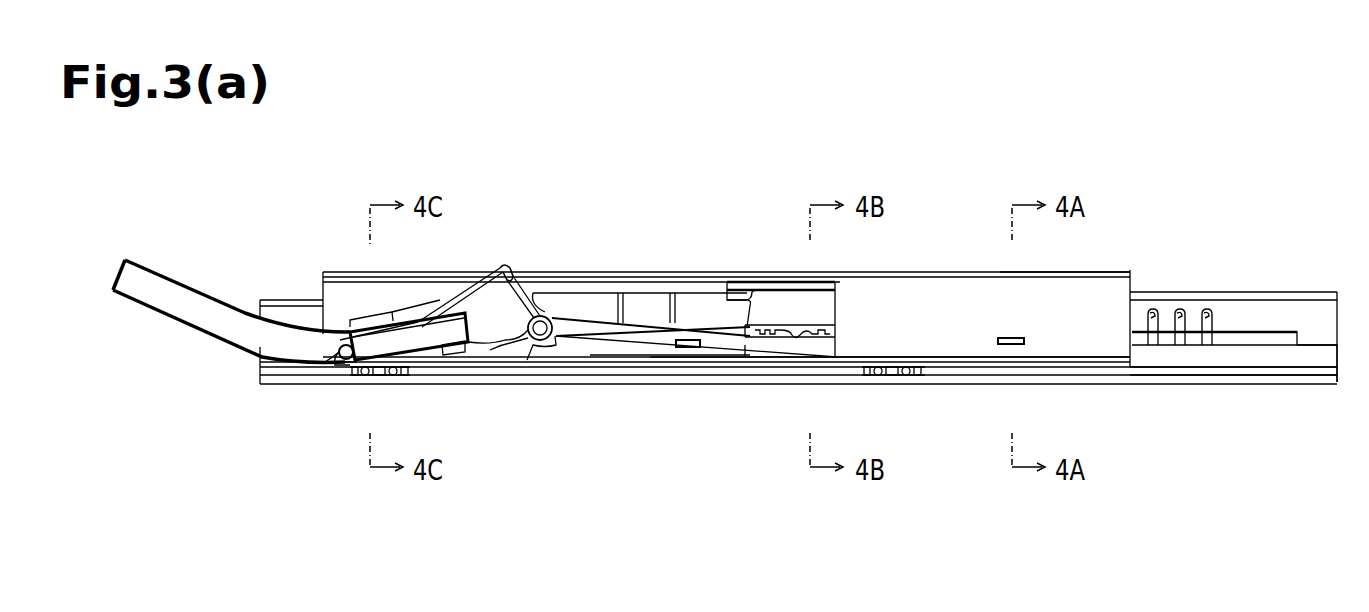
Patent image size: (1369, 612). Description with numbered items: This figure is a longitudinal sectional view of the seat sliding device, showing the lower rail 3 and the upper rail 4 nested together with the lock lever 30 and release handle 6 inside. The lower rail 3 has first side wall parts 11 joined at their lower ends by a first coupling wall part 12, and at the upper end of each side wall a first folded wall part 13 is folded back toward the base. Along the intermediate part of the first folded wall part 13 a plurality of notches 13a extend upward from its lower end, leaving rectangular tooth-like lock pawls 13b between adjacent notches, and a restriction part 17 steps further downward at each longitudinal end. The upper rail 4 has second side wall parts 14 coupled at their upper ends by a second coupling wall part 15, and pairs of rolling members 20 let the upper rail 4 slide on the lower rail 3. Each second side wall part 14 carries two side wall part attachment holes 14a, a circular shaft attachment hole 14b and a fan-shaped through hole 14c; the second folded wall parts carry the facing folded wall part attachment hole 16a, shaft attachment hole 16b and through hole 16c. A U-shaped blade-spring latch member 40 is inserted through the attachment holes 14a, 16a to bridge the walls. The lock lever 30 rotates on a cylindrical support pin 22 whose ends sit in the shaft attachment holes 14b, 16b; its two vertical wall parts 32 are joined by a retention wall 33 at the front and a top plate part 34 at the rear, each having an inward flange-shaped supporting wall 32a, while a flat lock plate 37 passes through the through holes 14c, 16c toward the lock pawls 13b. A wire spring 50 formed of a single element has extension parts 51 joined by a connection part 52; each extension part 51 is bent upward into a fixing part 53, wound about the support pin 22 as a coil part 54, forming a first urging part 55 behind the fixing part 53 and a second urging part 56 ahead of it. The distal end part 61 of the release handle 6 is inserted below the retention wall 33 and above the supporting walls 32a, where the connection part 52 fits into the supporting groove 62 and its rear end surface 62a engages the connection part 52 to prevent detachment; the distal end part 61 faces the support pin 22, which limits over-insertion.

The lower rail 3 is at (300, 388).
The upper rail 4 is at (420, 278).
The release handle 6 is at (185, 287).
The first side wall parts 11 is at (1282, 362).
The first coupling wall part 12 is at (1232, 382).
The first folded wall part 13 is at (1272, 308).
The notches 13a is at (1207, 309).
The lock pawls 13b is at (1207, 333).
The second side wall parts 14 is at (1098, 352).
The side wall part attachment holes 14a is at (890, 418).
The shaft attachment hole 14b is at (512, 408).
The through hole 14c is at (696, 405).
The second coupling wall part 15 is at (1078, 268).
The folded wall part attachment hole 16a is at (1003, 349).
The shaft attachment hole 16b is at (540, 341).
The through hole 16c is at (748, 352).
The restriction part 17 is at (1318, 362).
The rolling members 20 is at (386, 378).
The support pin 22 is at (553, 339).
The lock lever 30 is at (547, 290).
The vertical wall parts 32 is at (497, 338).
The supporting wall 32a is at (455, 356).
The retention wall 33 is at (363, 317).
The top plate part 34 is at (777, 287).
The lock plate 37 is at (840, 331).
The latch member 40 is at (690, 348).
The wire spring 50 is at (570, 313).
The extension parts 51 is at (638, 300).
The connection part 52 is at (346, 366).
The fixing part 53 is at (498, 262).
The coil part 54 is at (545, 337).
The first urging part 55 is at (720, 300).
The second urging part 56 is at (445, 297).
The distal end part 61 is at (231, 300).
The supporting groove 62 is at (340, 376).
The rear end surface 62a is at (337, 347).